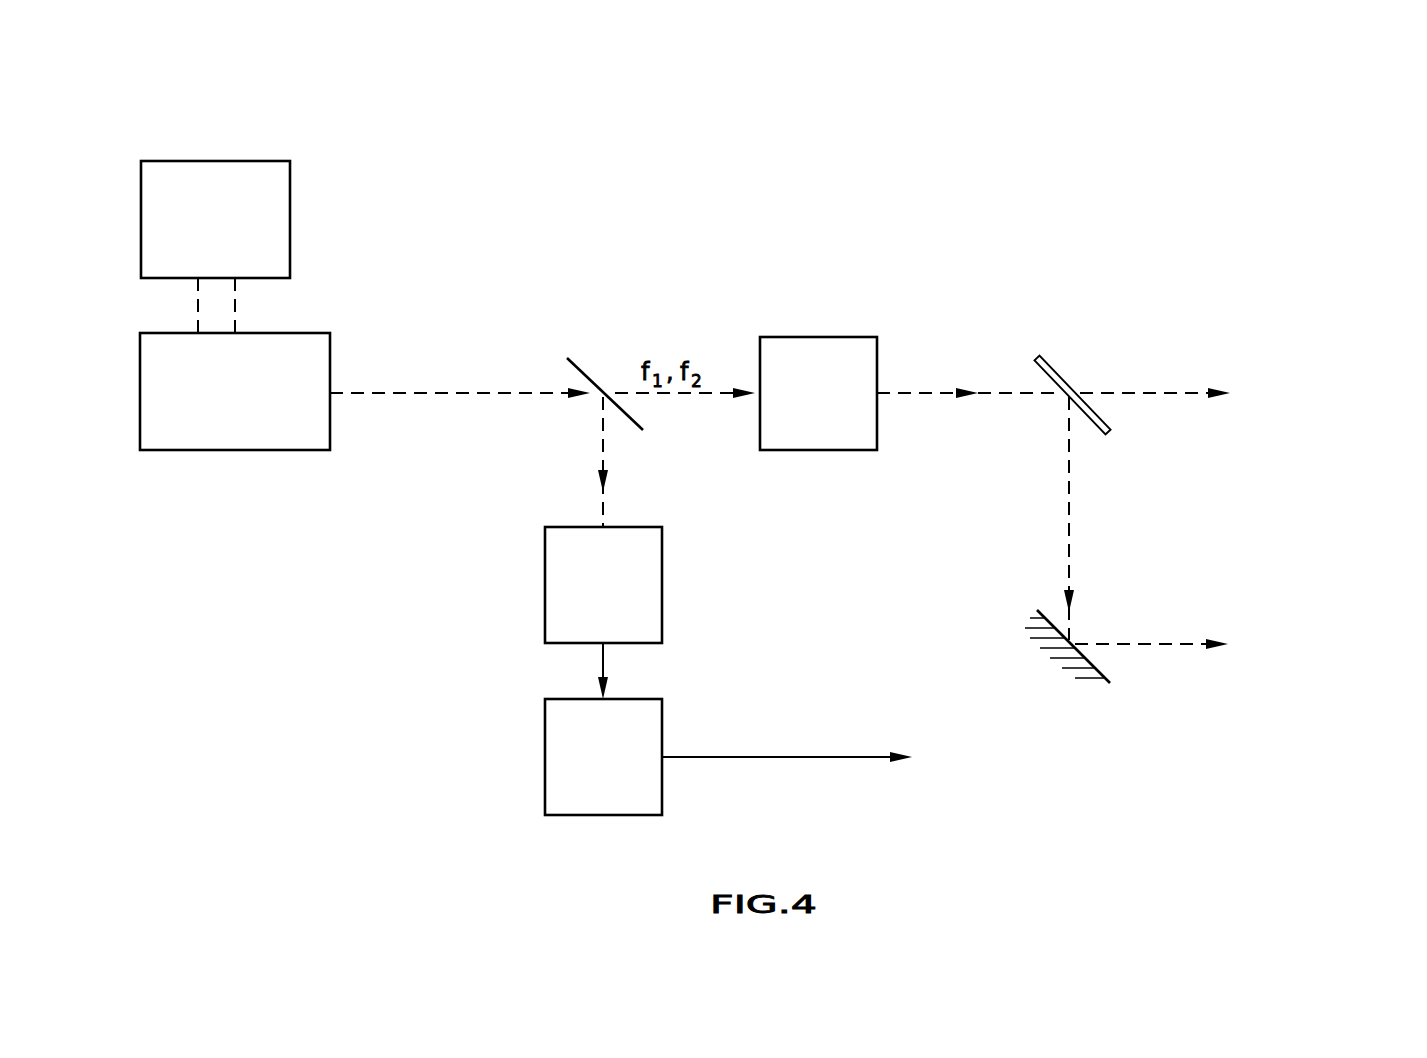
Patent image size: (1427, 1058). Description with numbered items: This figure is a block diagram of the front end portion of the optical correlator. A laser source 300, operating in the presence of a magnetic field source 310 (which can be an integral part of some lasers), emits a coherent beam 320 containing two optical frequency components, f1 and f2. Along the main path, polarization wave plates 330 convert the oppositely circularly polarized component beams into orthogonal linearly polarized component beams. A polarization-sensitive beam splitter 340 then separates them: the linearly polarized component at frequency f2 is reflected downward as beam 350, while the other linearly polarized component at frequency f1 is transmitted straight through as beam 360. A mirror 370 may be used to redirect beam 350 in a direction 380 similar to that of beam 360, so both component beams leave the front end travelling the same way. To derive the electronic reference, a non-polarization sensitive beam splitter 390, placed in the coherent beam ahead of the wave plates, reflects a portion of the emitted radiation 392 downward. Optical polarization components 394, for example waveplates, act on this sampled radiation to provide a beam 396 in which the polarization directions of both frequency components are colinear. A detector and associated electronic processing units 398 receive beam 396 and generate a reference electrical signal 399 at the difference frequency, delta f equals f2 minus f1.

The laser source 300 is at (157, 428).
The magnetic field source 310 is at (275, 187).
The coherent beam 320 is at (473, 390).
The polarization wave plates 330 is at (770, 402).
The polarization-sensitive beam splitter 340 is at (1037, 368).
The reflected linearly polarized component beam f2 350 is at (1069, 572).
The linearly polarized beam f1 360 is at (1153, 397).
The mirror 370 is at (1070, 656).
The direction 380 is at (1148, 645).
The non-polarization sensitive beam splitter 390 is at (570, 361).
The emitted radiation 392 is at (603, 438).
The optical polarization components 394 is at (548, 615).
The beam 396 is at (603, 665).
The detector and associated electronic processing units 398 is at (548, 782).
The reference electrical signal 399 is at (835, 757).